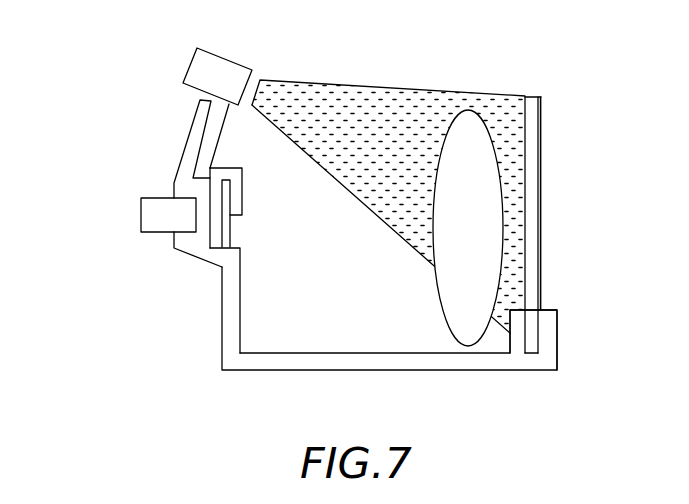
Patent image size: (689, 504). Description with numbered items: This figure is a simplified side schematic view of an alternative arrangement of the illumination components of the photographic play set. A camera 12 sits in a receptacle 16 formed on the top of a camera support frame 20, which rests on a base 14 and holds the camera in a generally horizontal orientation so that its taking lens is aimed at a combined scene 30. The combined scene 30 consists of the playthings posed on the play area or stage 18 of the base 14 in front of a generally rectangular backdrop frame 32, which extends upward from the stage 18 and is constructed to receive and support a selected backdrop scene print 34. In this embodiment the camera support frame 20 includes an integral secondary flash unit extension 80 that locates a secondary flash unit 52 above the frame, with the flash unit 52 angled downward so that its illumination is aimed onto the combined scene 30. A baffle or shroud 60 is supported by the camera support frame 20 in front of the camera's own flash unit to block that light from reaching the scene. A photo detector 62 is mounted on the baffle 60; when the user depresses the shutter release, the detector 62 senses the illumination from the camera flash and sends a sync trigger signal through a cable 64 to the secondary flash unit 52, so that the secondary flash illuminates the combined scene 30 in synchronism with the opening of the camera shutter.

The camera 12 is at (146, 233).
The base 14 is at (352, 371).
The receptacle 16 is at (150, 183).
The play area or stage 18 is at (483, 301).
The camera support frame 20 is at (220, 303).
The combined scene 30 is at (473, 84).
The backdrop frame 32 is at (558, 330).
The backdrop scene print 34 is at (542, 182).
The secondary flash unit 52 is at (189, 67).
The baffle or shroud 60 is at (228, 246).
The photo detector 62 is at (232, 218).
The cable 64 is at (218, 142).
The secondary flash unit extension 80 is at (186, 143).